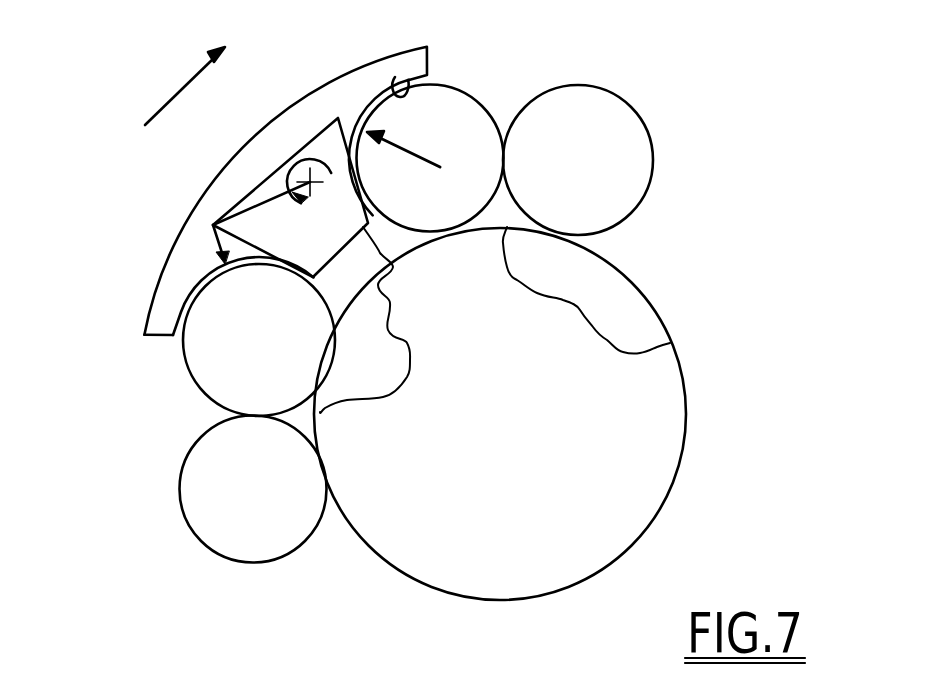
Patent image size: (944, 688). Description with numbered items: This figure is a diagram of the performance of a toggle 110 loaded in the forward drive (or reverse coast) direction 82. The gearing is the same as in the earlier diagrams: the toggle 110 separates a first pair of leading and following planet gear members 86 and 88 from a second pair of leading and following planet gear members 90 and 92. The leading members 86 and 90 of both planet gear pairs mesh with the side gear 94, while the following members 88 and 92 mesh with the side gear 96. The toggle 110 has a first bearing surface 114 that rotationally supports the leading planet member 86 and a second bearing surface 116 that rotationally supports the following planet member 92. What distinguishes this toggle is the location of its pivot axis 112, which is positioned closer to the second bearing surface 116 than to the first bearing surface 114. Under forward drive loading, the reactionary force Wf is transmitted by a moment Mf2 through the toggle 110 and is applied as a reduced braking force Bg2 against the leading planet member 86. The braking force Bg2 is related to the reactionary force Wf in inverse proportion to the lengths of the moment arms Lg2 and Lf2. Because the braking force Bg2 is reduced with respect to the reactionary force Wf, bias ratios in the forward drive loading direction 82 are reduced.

The forward drive direction 82 is at (189, 74).
The leading planet gear member 86 is at (210, 400).
The following planet gear member 88 is at (212, 553).
The leading planet gear member 90 is at (623, 98).
The following planet gear member 92 is at (474, 97).
The side gear 94 is at (405, 357).
The side gear 96 is at (593, 560).
The toggle 110 is at (353, 220).
The pivot axis 112 is at (318, 192).
The first bearing surface 114 is at (194, 294).
The second bearing surface 116 is at (395, 77).
The moment arm Lf2 is at (327, 136).
The moment Mf2 is at (287, 179).
The moment arm Lg2 is at (233, 214).
The braking force Bg2 is at (216, 250).
The reactionary force Wf is at (418, 127).